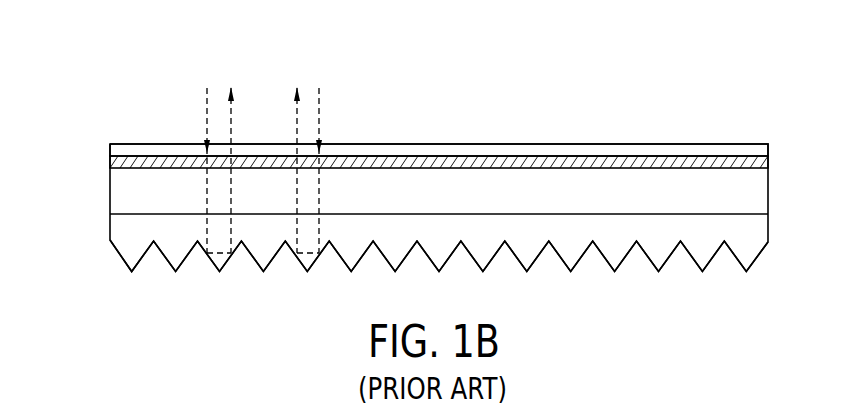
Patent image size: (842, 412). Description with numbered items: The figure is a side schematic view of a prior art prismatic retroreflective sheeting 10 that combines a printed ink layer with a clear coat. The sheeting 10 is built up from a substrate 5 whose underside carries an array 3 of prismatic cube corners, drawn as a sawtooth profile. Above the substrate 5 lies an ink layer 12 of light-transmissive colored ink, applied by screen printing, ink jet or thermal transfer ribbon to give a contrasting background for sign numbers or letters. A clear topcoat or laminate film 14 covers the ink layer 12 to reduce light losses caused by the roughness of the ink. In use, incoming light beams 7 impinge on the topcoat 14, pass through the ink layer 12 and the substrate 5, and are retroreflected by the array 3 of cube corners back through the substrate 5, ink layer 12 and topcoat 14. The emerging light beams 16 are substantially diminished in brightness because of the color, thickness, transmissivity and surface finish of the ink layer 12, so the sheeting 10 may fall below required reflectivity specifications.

The prismatic retroreflective sheeting 10 is at (431, 155).
The substrate 5 is at (120, 186).
The array of prismatic cube corners 3 is at (127, 258).
The clear topcoat or laminate film 14 is at (712, 150).
The ink layer 12 is at (765, 163).
The incoming light beams 7 is at (319, 110).
The emerging light beams 16 is at (296, 113).